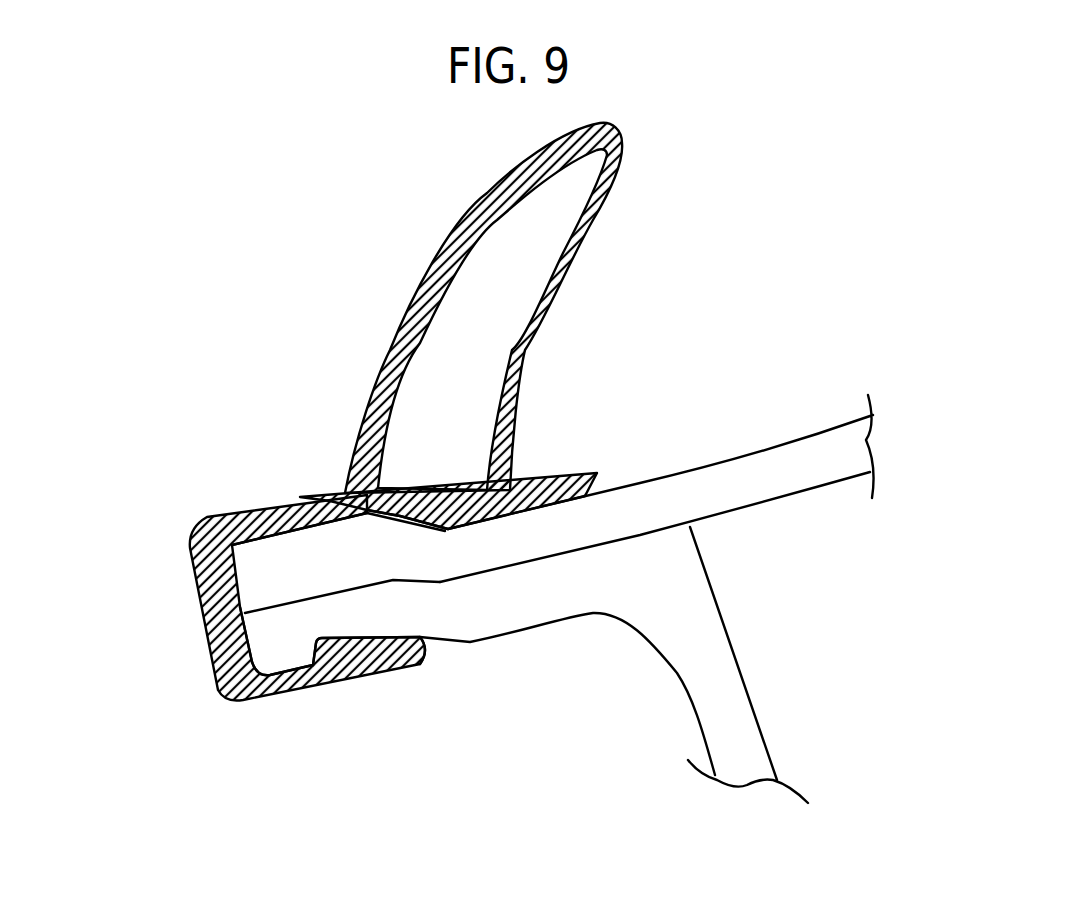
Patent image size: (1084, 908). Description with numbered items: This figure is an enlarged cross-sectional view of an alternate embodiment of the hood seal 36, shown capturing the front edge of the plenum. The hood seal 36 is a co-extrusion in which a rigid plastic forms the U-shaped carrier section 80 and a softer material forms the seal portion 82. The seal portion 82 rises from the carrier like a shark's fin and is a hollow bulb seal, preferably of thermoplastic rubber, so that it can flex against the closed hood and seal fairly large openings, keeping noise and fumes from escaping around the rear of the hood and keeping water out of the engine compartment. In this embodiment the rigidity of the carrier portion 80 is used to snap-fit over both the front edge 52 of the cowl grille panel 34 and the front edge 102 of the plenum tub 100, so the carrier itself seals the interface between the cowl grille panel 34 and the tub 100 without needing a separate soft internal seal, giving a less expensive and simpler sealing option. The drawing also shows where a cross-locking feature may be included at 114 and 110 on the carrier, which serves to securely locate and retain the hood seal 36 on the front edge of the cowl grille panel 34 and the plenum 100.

The hood seal 36 is at (276, 401).
The front edge of the cowl grille panel 52 is at (320, 553).
The U-shaped carrier section 80 is at (195, 545).
The seal portion 82 is at (517, 370).
The plenum tub 100 is at (730, 720).
The front edge of the plenum tub 102 is at (285, 655).
The cross-locking feature 110 is at (367, 514).
The cross-locking feature 114 is at (337, 656).
The cowl grille panel 34 is at (802, 483).